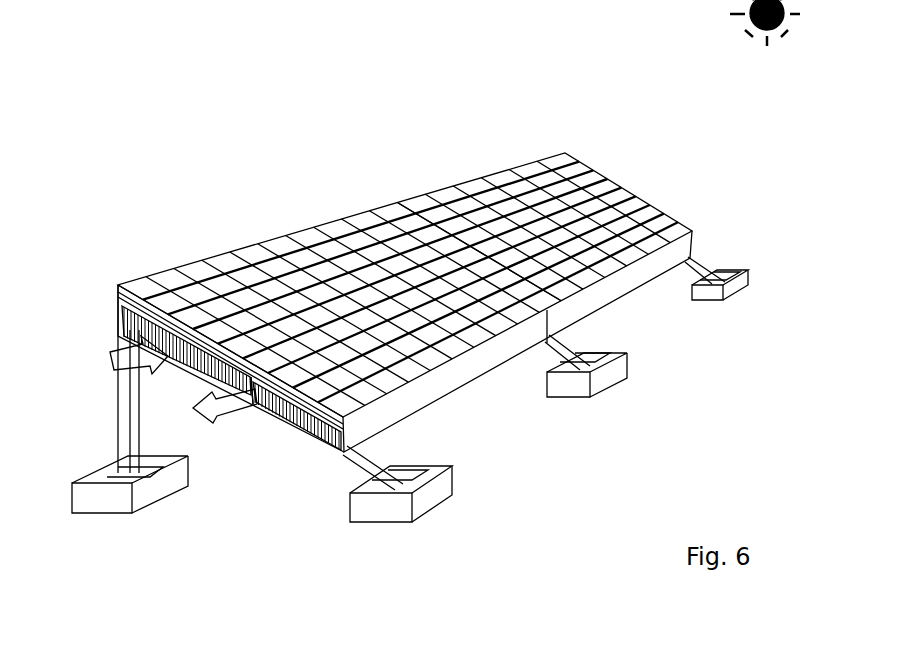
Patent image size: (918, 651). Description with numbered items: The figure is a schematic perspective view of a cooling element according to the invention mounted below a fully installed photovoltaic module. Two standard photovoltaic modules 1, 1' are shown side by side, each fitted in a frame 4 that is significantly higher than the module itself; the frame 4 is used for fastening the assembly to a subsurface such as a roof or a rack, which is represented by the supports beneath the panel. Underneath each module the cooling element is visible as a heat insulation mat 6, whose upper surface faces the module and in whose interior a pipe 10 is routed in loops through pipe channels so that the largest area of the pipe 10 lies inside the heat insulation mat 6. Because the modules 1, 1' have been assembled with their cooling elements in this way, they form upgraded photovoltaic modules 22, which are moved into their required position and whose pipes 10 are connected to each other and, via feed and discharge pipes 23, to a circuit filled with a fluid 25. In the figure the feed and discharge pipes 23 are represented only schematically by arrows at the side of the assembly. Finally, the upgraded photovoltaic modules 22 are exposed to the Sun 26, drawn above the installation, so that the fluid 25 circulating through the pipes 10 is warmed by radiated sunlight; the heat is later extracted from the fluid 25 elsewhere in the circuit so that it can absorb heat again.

The photovoltaic module 1 is at (405, 285).
The photovoltaic module 1' is at (478, 212).
The frame 4 is at (442, 378).
The heat insulation mat 6 is at (302, 425).
The pipe 10 is at (257, 387).
The fluid 25 is at (252, 390).
The upgraded photovoltaic module 22 is at (243, 228).
The feed and discharge pipes 23 is at (193, 408).
The Sun 26 is at (777, 37).